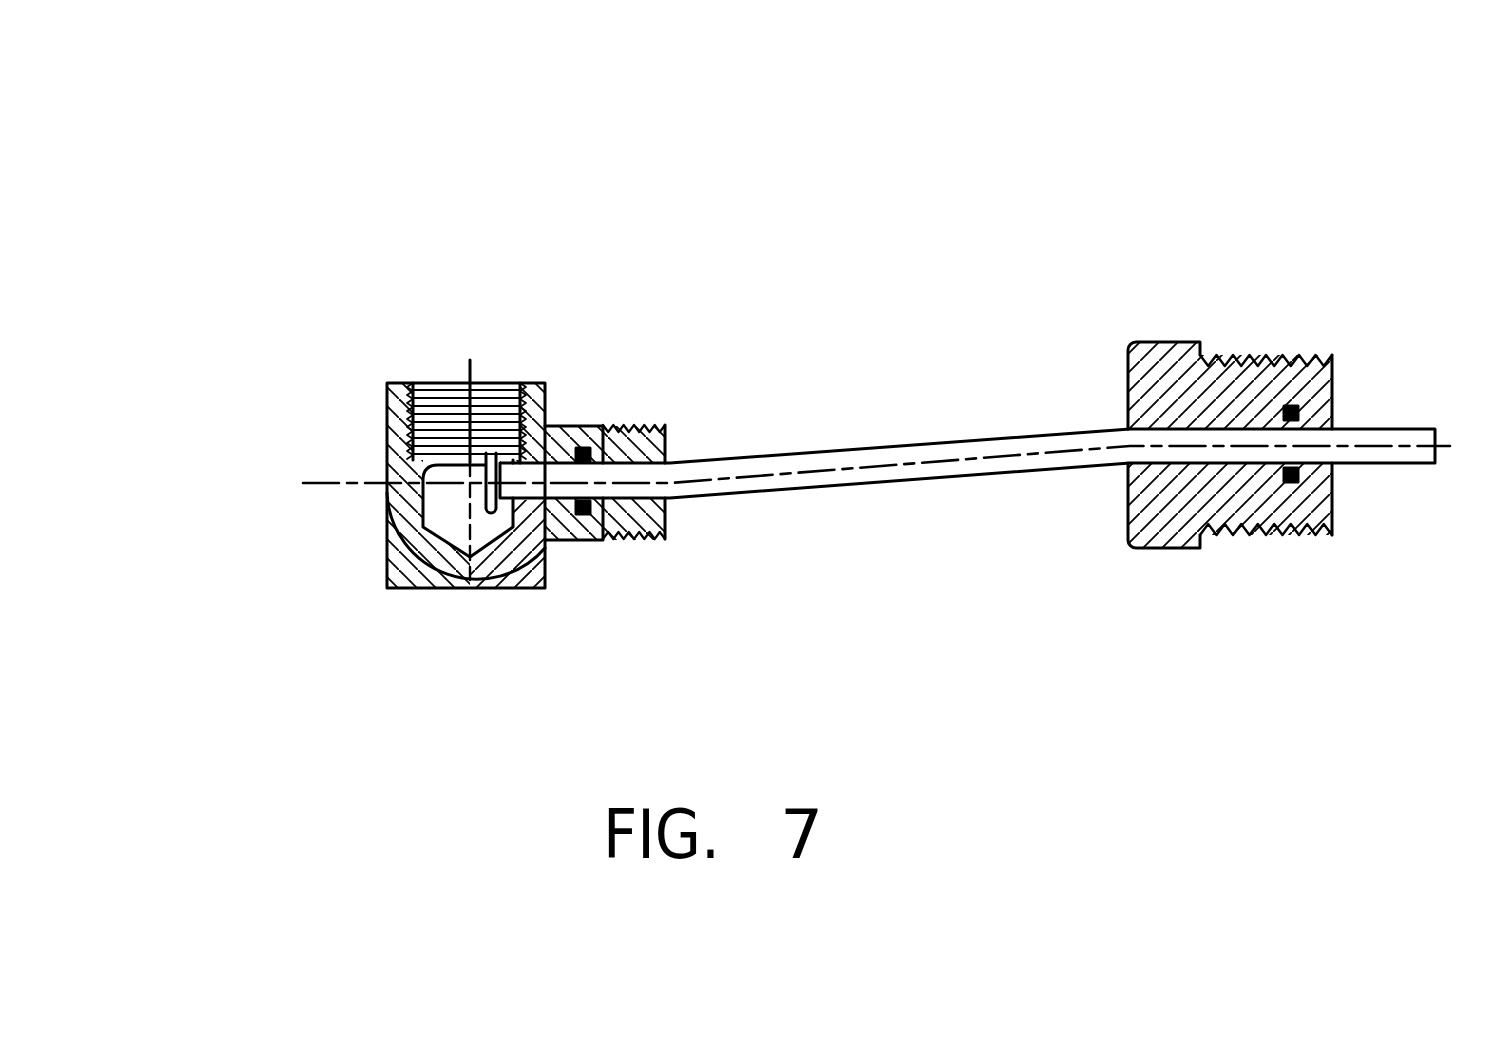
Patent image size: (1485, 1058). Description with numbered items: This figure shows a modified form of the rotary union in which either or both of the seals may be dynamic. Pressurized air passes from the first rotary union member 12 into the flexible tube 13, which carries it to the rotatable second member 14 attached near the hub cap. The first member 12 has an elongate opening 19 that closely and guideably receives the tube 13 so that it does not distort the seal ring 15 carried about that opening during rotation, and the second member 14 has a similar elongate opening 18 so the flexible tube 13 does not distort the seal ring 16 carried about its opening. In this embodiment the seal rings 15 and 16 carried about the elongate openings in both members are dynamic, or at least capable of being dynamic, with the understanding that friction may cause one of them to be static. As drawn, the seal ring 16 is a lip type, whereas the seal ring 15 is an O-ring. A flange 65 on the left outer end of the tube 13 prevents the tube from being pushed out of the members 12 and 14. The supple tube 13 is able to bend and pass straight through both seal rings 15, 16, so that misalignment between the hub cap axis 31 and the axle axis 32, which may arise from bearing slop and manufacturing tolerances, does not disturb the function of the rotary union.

The first rotary union member 12 is at (1143, 550).
The flexible tube 13 is at (843, 450).
The second member 14 is at (387, 400).
The seal ring 15 is at (1293, 413).
The seal ring 16 is at (387, 514).
The elongate opening 18 is at (603, 463).
The elongate opening 19 is at (1217, 353).
The hub cap axis 31 is at (613, 482).
The axle axis 32 is at (1002, 447).
The flange 65 is at (387, 547).